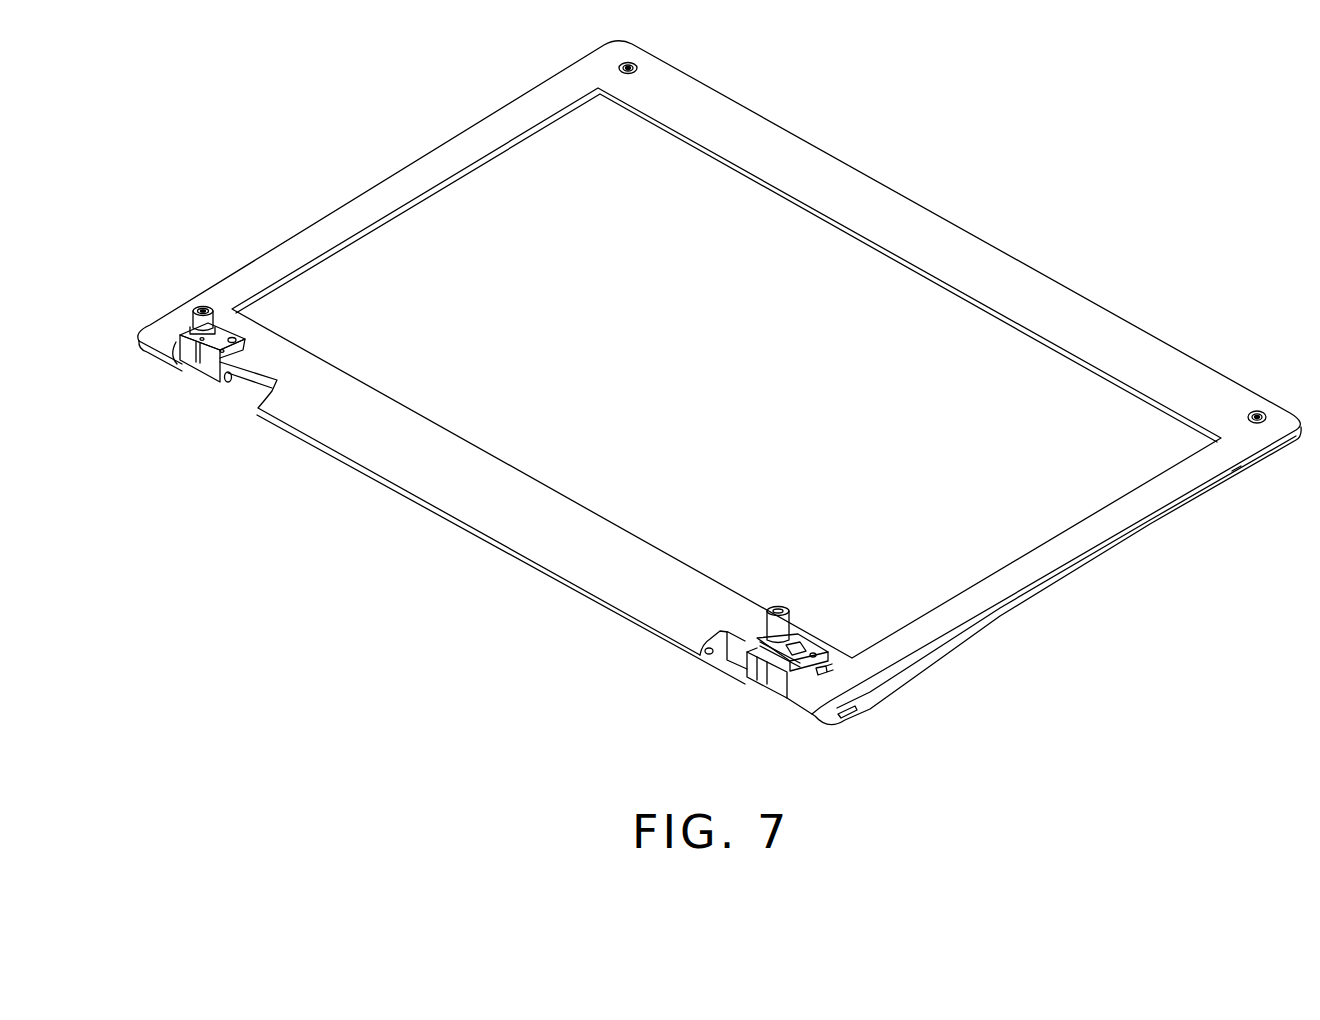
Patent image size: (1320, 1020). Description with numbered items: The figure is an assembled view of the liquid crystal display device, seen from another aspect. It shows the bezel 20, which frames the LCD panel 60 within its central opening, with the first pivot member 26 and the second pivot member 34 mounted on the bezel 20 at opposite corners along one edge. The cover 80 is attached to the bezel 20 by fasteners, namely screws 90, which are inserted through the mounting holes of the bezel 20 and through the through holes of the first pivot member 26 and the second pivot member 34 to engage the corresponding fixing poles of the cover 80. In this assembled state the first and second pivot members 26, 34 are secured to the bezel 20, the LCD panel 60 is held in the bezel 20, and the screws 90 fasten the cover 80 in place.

The bezel 20 is at (852, 194).
The LCD panel 60 is at (677, 187).
The screws 90 is at (638, 64).
The second pivot member 34 is at (211, 369).
The cover 80 is at (720, 661).
The first pivot member 26 is at (760, 672).